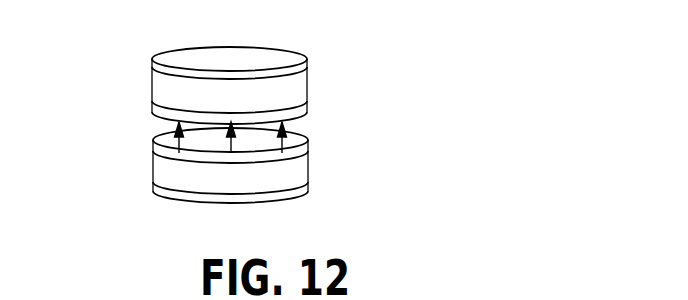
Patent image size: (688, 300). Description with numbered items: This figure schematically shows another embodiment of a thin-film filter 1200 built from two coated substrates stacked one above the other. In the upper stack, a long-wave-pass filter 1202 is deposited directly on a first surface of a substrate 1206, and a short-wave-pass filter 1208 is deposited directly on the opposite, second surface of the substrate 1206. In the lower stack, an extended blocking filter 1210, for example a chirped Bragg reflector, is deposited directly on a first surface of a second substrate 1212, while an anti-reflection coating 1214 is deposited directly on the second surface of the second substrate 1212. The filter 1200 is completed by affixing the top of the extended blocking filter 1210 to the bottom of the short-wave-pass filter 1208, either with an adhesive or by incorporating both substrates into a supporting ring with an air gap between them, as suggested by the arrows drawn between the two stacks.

The filter 1200 is at (103, 95).
The long-wave-pass filter 1202 is at (307, 59).
The substrate 1206 is at (307, 88).
The short-wave-pass filter 1208 is at (307, 104).
The extended blocking filter 1210 is at (308, 144).
The second substrate 1212 is at (308, 171).
The anti-reflection coating 1214 is at (308, 189).